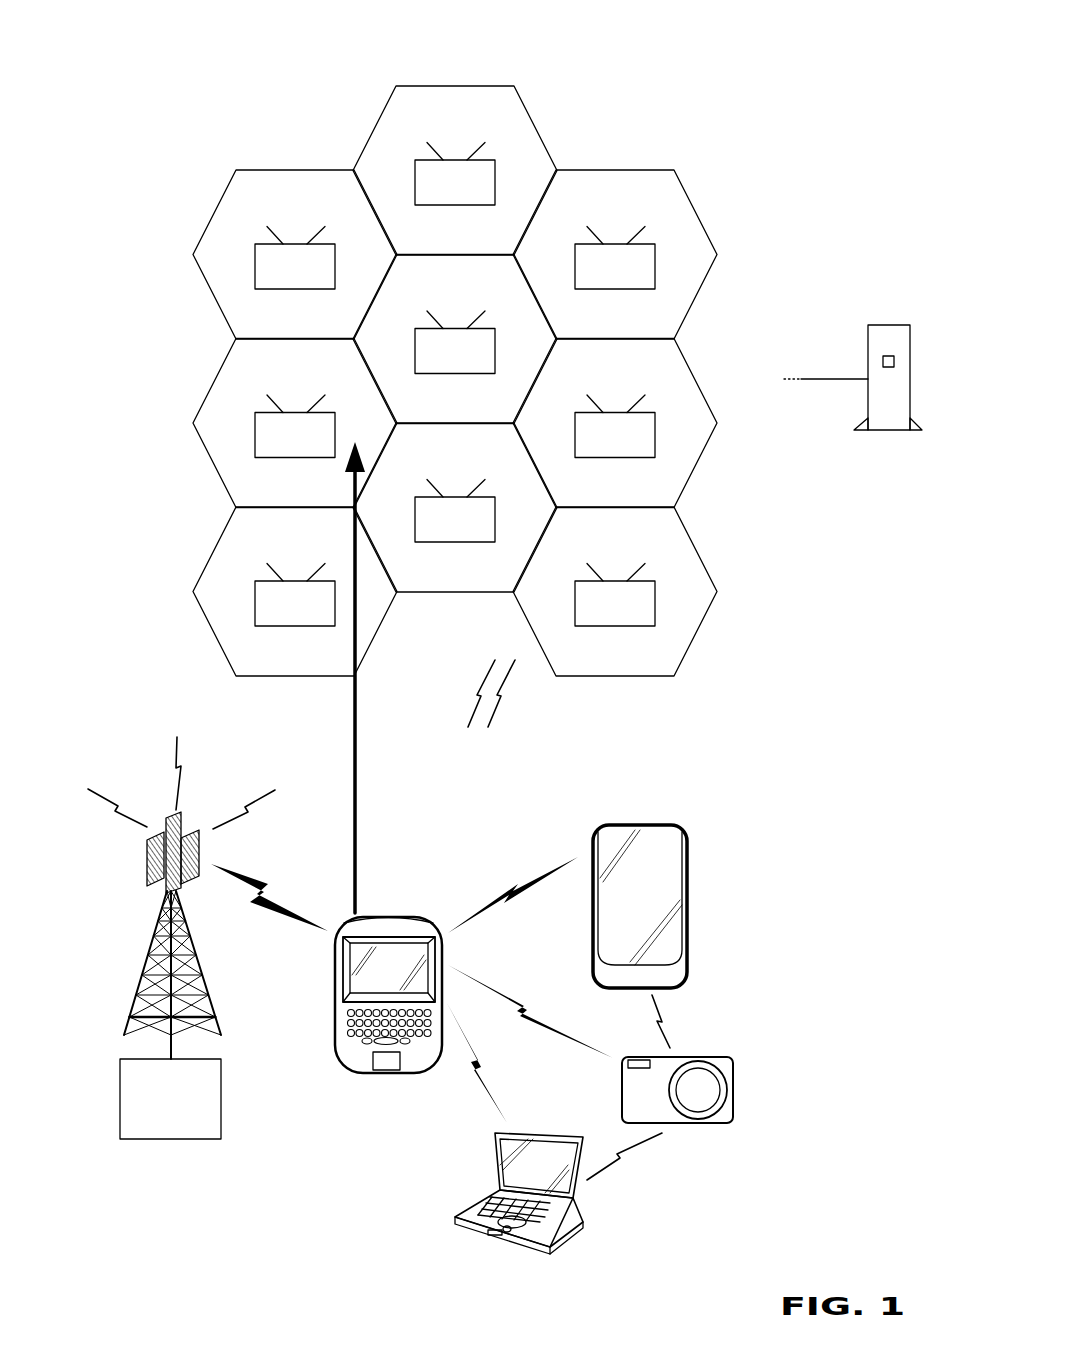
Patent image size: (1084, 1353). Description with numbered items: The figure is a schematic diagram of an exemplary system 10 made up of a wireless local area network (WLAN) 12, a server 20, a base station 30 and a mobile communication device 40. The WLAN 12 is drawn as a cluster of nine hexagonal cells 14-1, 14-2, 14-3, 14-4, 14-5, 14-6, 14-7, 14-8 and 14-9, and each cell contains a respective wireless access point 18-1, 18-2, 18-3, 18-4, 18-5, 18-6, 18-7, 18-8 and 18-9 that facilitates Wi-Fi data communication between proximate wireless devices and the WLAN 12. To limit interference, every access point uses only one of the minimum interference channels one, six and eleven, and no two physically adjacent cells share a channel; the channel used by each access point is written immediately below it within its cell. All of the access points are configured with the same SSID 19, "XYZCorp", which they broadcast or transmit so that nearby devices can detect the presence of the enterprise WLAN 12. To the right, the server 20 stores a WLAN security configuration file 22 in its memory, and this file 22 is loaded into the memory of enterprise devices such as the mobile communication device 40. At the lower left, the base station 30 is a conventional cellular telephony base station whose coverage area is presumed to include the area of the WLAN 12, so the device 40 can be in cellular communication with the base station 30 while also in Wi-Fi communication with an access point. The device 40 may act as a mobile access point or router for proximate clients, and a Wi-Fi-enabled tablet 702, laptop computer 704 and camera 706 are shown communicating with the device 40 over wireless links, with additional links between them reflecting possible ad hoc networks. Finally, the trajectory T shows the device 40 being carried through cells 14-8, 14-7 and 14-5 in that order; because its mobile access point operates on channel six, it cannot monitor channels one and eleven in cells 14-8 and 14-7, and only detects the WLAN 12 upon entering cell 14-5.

The system 10 is at (191, 136).
The wireless local area network (WLAN) 12 is at (721, 65).
The cell 14-1 is at (455, 170).
The cell 14-2 is at (295, 254).
The cell 14-3 is at (615, 254).
The cell 14-4 is at (455, 339).
The cell 14-5 is at (295, 423).
The cell 14-6 is at (615, 423).
The cell 14-7 is at (455, 507).
The cell 14-8 is at (295, 591).
The cell 14-9 is at (615, 591).
The wireless access point 18-1 is at (455, 174).
The wireless access point 18-2 is at (295, 258).
The wireless access point 18-3 is at (615, 258).
The wireless access point 18-4 is at (455, 342).
The wireless access point 18-5 is at (295, 426).
The wireless access point 18-6 is at (615, 426).
The wireless access point 18-7 is at (455, 511).
The wireless access point 18-8 is at (295, 595).
The wireless access point 18-9 is at (615, 595).
The SSID 19 is at (459, 722).
The server 20 is at (889, 325).
The WLAN security configuration file 22 is at (883, 361).
The base station 30 is at (184, 1128).
The mobile communication device 40 is at (388, 917).
The trajectory T is at (357, 757).
The tablet 702 is at (675, 878).
The laptop computer 704 is at (552, 1235).
The camera 706 is at (725, 1067).